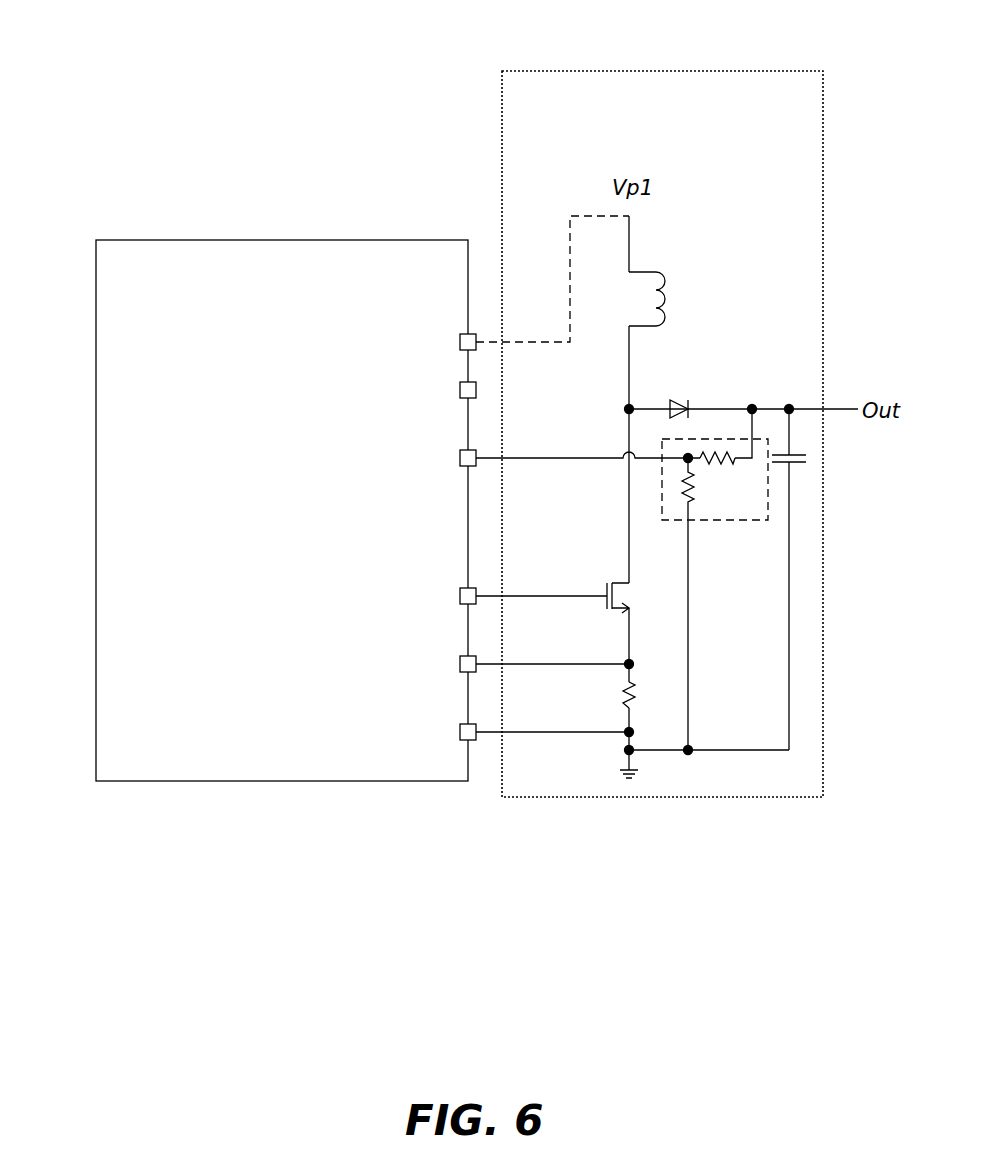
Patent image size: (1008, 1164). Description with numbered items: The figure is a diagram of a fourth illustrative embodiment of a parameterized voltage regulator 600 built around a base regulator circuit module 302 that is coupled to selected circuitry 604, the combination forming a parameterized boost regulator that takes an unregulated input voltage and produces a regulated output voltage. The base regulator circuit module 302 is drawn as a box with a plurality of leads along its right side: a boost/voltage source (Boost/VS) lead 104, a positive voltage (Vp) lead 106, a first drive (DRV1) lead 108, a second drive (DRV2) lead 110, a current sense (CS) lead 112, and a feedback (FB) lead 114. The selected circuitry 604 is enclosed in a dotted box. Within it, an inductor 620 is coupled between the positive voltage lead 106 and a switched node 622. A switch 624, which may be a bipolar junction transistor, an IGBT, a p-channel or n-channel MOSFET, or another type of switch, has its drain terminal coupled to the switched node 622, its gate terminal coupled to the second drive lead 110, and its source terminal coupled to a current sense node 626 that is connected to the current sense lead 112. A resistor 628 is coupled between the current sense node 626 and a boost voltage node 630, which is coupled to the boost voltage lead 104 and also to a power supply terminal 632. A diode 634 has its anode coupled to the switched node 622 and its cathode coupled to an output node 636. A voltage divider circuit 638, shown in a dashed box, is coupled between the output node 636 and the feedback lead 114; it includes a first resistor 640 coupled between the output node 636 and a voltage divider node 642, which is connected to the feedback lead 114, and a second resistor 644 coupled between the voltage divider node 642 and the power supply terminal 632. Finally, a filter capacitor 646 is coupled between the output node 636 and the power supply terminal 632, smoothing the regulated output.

The parameterized voltage regulator 600 is at (114, 62).
The base regulator circuit module 302 is at (146, 240).
The selected circuitry 604 is at (652, 71).
The positive voltage (Vp) lead 106 is at (460, 336).
The first drive (DRV1) lead 108 is at (460, 384).
The feedback (FB) lead 114 is at (460, 468).
The second drive (DRV2) lead 110 is at (460, 590).
The current sense (CS) lead 112 is at (460, 658).
The boost/voltage source (Boost/VS) lead 104 is at (460, 725).
The inductor 620 is at (661, 271).
The switched node 622 is at (629, 409).
The diode 634 is at (679, 400).
The output node 636 is at (789, 409).
The voltage divider node 642 is at (688, 458).
The filter capacitor 646 is at (800, 465).
The first resistor 640 is at (728, 462).
The second resistor 644 is at (690, 496).
The voltage divider circuit 638 is at (700, 520).
The switch 624 is at (600, 552).
The current sense node 626 is at (629, 660).
The resistor 628 is at (629, 694).
The boost voltage node 630 is at (625, 737).
The power supply terminal 632 is at (623, 772).